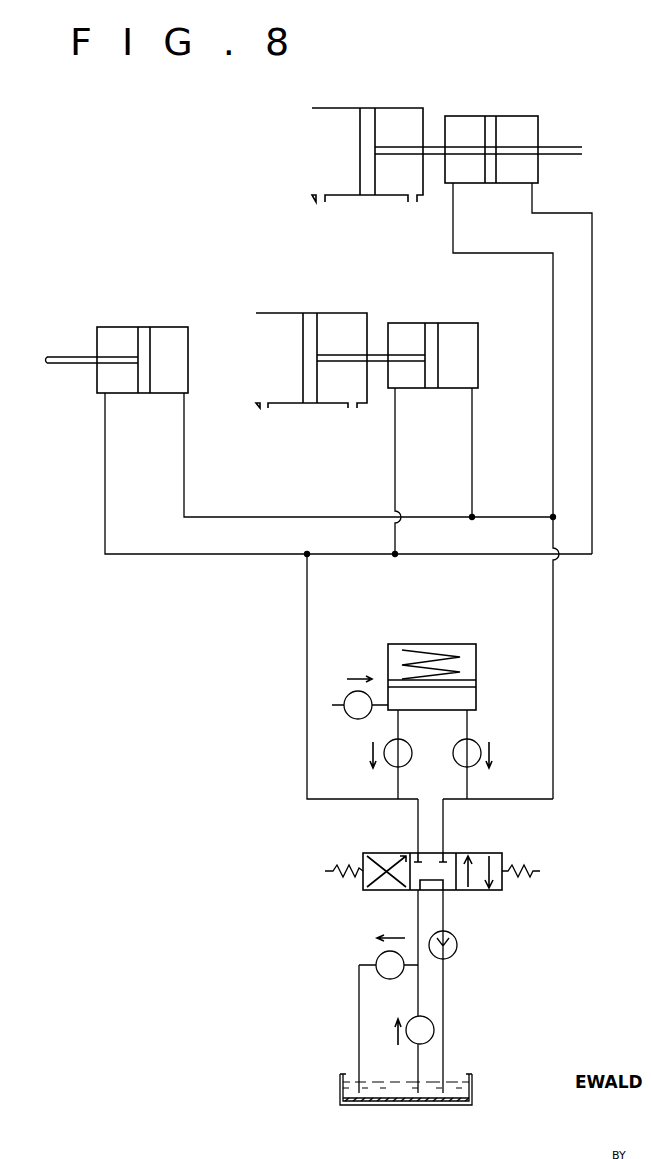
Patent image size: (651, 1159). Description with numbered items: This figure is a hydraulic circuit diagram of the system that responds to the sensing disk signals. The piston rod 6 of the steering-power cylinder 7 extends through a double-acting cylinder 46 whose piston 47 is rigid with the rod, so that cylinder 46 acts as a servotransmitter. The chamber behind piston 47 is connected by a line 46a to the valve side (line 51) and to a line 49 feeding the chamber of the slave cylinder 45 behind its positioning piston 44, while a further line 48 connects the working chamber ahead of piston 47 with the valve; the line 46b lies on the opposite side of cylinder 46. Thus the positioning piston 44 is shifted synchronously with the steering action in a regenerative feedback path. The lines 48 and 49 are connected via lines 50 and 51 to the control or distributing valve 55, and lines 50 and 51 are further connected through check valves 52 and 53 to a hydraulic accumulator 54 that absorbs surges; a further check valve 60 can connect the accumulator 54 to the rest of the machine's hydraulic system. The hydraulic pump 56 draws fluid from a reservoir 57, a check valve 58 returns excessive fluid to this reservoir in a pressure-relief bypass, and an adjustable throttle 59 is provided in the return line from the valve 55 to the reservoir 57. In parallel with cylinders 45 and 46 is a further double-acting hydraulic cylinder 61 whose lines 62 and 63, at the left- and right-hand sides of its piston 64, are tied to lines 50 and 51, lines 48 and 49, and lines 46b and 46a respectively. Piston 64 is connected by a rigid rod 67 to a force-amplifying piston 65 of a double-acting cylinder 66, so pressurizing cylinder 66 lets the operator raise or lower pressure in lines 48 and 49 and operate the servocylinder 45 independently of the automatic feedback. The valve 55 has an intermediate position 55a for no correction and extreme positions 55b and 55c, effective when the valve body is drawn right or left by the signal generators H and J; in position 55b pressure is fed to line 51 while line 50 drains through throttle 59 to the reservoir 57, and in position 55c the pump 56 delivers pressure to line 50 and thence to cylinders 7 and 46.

The piston rod 6 is at (398, 148).
The steering-power cylinder 7 is at (312, 128).
The positioning piston 44 is at (50, 367).
The slave cylinder 45 is at (113, 327).
The double-acting cylinder 46 is at (460, 116).
The line 46a is at (553, 278).
The line 46b is at (592, 260).
The piston 47 is at (492, 132).
The line 48 is at (141, 556).
The line 49 is at (205, 517).
The line 50 is at (307, 608).
The line 51 is at (553, 627).
The check valve 52 is at (410, 742).
The check valve 53 is at (480, 742).
The hydraulic accumulator 54 is at (470, 645).
The distributing valve 55 is at (435, 907).
The intermediate position 55a is at (445, 861).
The extreme position 55b is at (383, 889).
The extreme position 55c is at (500, 856).
The hydraulic pump 56 is at (434, 1030).
The reservoir 57 is at (373, 1110).
The check valve 58 is at (378, 958).
The adjustable throttle 59 is at (458, 950).
The check valve 60 is at (348, 714).
The double-acting hydraulic cylinder 61 is at (478, 335).
The line 62 is at (395, 422).
The line 63 is at (472, 407).
The piston 64 is at (432, 327).
The force-amplifying piston 65 is at (308, 318).
The double-acting cylinder 66 is at (256, 370).
The rigid rod 67 is at (378, 362).